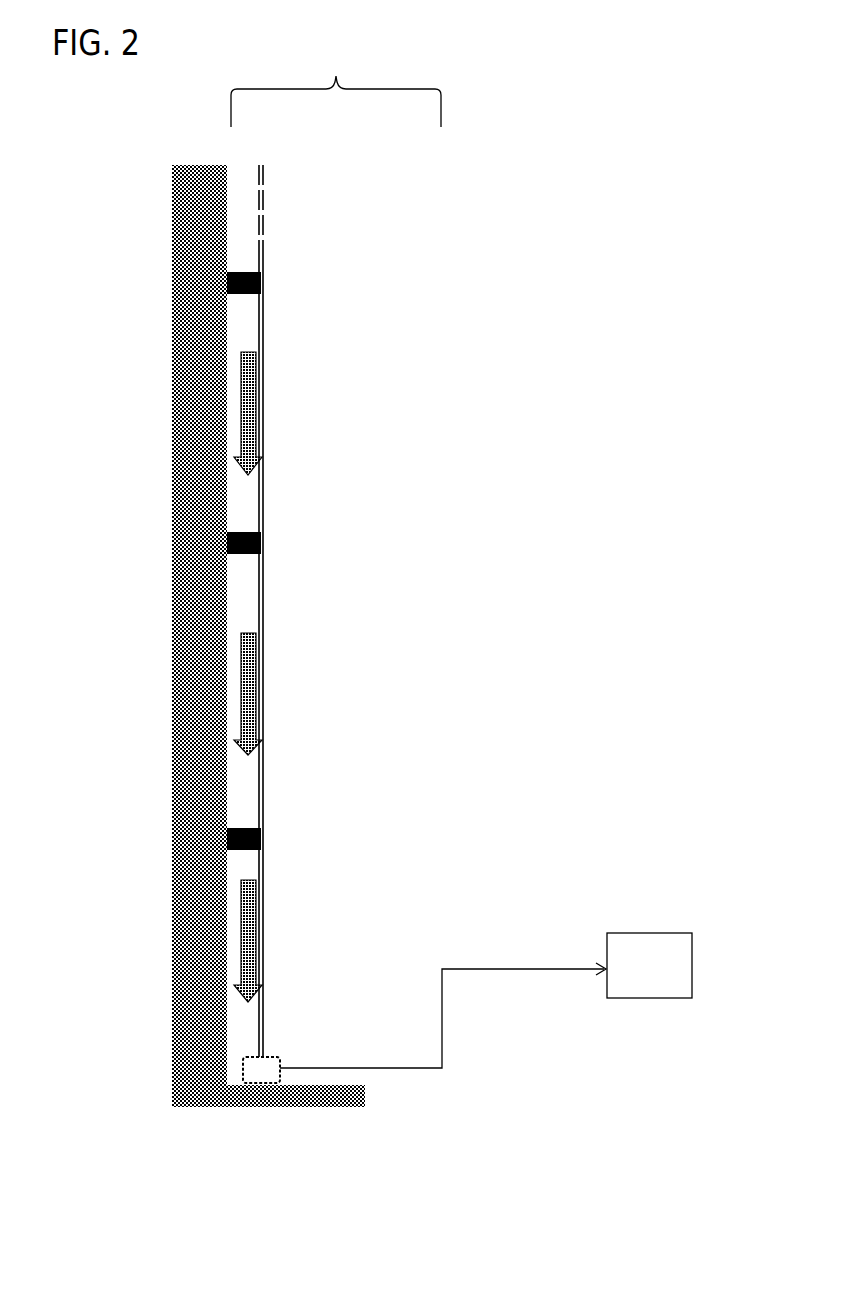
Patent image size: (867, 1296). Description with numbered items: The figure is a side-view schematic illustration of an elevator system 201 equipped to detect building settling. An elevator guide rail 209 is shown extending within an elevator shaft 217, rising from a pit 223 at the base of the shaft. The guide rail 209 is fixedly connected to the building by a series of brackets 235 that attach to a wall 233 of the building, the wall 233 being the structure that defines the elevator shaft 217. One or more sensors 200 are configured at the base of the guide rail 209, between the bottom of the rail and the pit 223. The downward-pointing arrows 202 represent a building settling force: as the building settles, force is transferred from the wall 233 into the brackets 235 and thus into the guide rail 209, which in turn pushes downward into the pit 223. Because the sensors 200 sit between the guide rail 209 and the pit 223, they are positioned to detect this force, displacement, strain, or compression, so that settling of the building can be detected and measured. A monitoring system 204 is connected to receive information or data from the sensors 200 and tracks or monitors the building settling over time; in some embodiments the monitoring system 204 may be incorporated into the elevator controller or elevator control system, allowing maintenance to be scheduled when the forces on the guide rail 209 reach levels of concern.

The sensor 200 is at (270, 1064).
The elevator system 201 is at (484, 276).
The arrows 202 is at (250, 398).
The monitoring system 204 is at (692, 960).
The elevator guide rail 209 is at (261, 165).
The elevator shaft 217 is at (336, 76).
The pit 223 is at (340, 1095).
The wall 233 is at (175, 532).
The brackets 235 is at (243, 272).